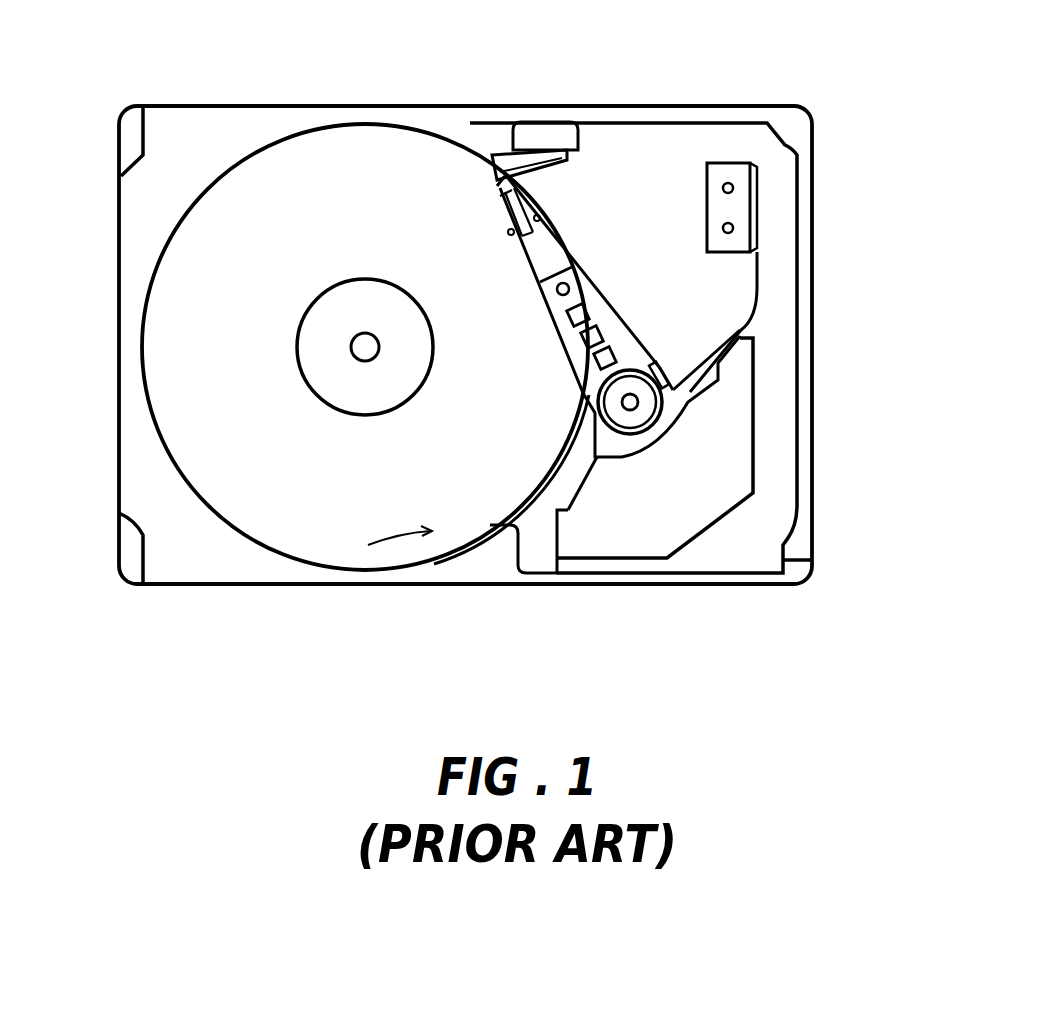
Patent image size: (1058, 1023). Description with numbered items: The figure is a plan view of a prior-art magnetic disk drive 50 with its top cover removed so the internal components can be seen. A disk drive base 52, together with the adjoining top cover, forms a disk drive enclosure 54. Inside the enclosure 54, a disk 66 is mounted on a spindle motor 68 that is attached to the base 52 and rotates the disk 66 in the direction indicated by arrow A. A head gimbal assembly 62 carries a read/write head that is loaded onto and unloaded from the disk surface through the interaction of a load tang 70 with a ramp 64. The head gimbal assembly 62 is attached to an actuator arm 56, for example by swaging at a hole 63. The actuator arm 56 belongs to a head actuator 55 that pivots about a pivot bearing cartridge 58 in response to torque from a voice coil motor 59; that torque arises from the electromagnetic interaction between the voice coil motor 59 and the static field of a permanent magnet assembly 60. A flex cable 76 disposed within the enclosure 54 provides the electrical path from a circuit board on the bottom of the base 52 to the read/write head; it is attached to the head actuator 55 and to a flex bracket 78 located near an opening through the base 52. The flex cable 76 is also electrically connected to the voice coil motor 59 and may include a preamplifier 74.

The magnetic disk drive 50 is at (224, 74).
The disk drive base 52 is at (804, 366).
The disk drive enclosure 54 is at (641, 347).
The head actuator 55 is at (590, 425).
The actuator arm 56 is at (577, 338).
The pivot bearing cartridge 58 is at (634, 403).
The voice coil motor 59 is at (603, 443).
The permanent magnet assembly 60 is at (710, 473).
The head gimbal assembly 62 is at (542, 258).
The hole 63 is at (562, 291).
The ramp 64 is at (560, 168).
The disk 66 is at (167, 342).
The spindle motor 68 is at (360, 349).
The load tang 70 is at (498, 188).
The preamplifier 74 is at (664, 366).
The flex cable 76 is at (758, 286).
The flex bracket 78 is at (740, 202).